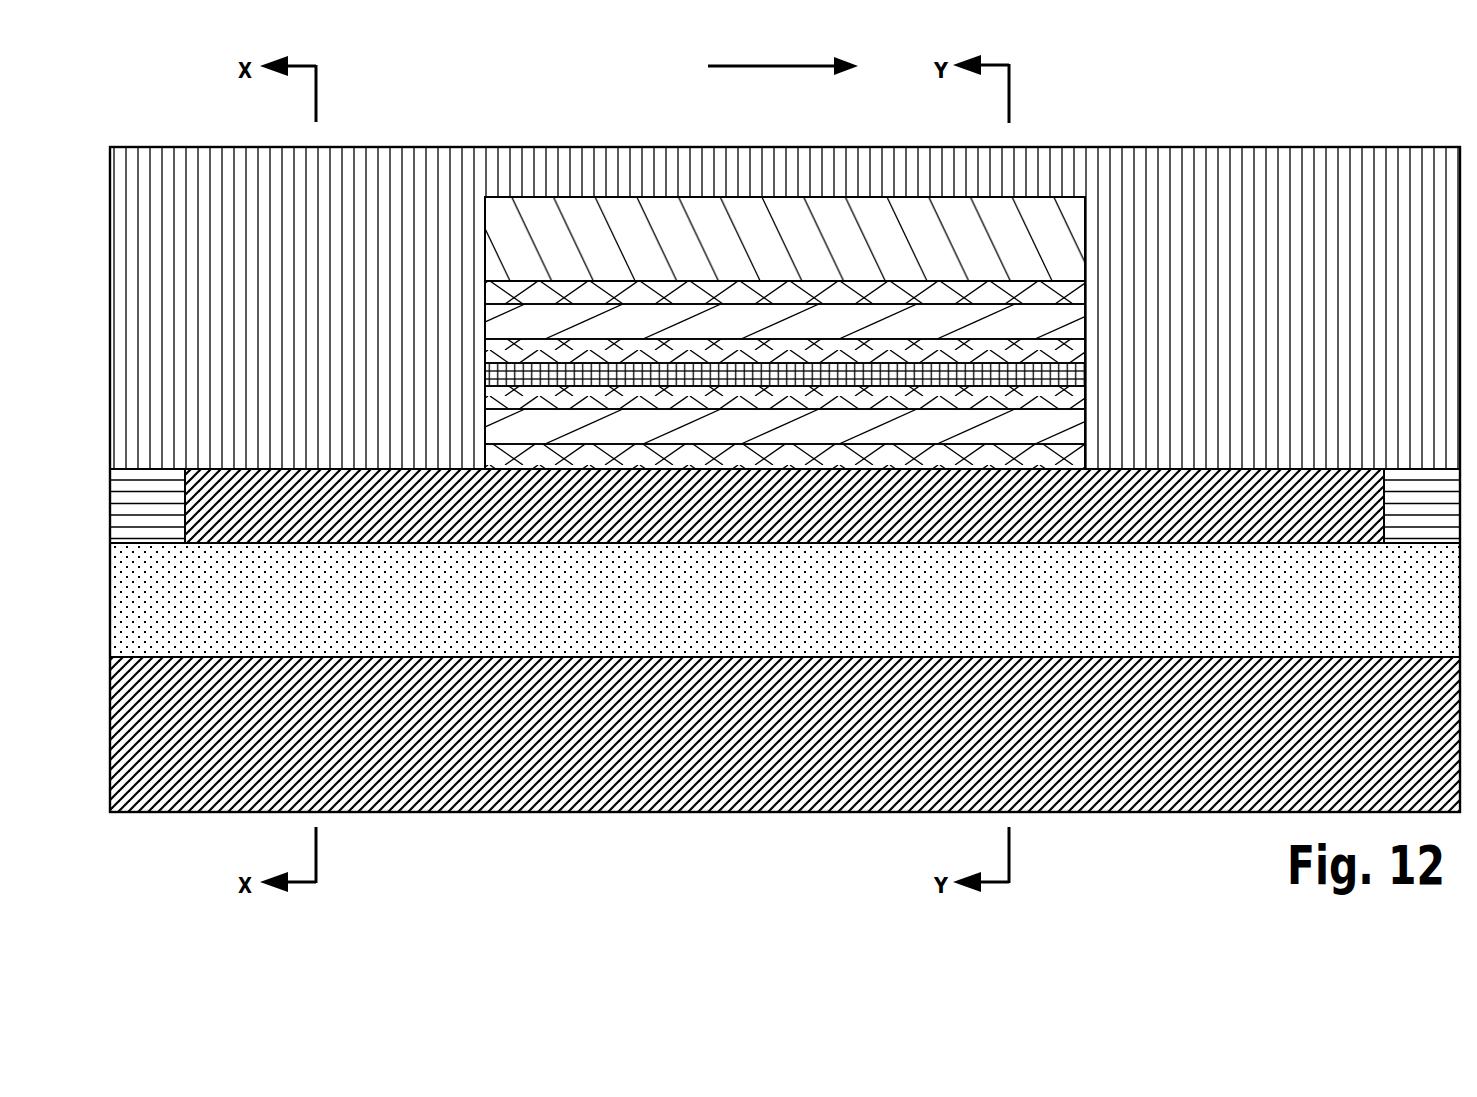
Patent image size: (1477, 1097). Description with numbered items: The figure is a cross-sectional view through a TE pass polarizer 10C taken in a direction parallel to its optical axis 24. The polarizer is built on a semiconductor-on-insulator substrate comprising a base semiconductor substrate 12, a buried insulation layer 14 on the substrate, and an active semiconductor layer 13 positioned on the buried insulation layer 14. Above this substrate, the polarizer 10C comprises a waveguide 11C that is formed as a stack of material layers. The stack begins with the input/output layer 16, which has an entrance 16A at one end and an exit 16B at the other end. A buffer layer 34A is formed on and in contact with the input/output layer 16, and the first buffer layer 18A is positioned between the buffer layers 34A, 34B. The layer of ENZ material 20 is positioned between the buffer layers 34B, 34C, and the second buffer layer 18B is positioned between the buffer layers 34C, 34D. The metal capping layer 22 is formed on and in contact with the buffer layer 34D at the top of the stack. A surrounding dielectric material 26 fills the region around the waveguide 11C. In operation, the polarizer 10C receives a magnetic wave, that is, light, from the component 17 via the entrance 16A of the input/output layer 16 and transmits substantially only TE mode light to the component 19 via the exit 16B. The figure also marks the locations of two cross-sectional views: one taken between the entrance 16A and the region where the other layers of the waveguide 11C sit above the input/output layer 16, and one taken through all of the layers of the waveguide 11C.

The TE pass polarizer 10C is at (1309, 80).
The waveguide 11C is at (1146, 251).
The base semiconductor substrate 12 is at (1400, 703).
The active semiconductor layer 13 is at (1234, 529).
The buried insulation layer 14 is at (1400, 629).
The input/output layer 16 is at (783, 518).
The entrance 16A is at (185, 503).
The exit 16B is at (1384, 503).
The component 17 is at (135, 519).
The first buffer layer 18A is at (772, 433).
The second buffer layer 18B is at (772, 328).
The component 19 is at (1410, 519).
The layer of ENZ material 20 is at (776, 384).
The metal capping layer 22 is at (781, 250).
The optical axis 24 is at (766, 65).
The dielectric layer 26 is at (290, 285).
The buffer layer 34A is at (770, 465).
The buffer layer 34B is at (770, 407).
The buffer layer 34C is at (770, 360).
The buffer layer 34D is at (770, 301).